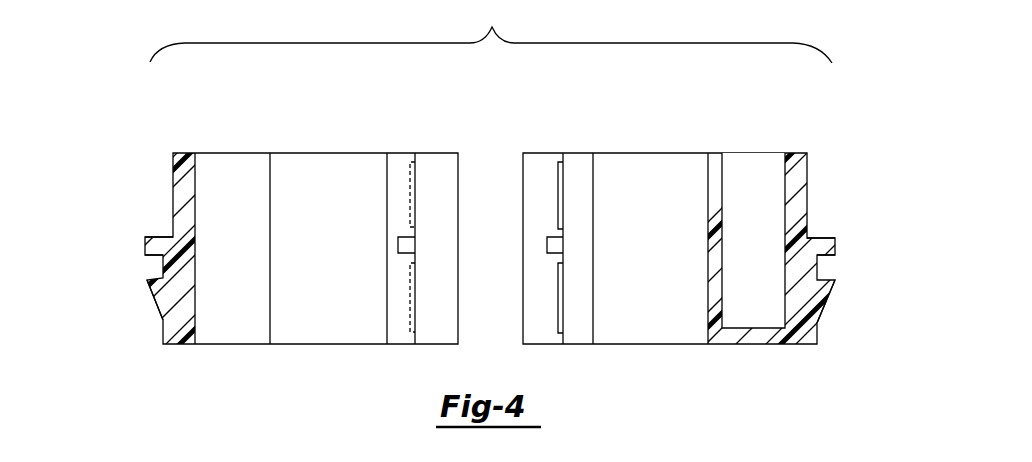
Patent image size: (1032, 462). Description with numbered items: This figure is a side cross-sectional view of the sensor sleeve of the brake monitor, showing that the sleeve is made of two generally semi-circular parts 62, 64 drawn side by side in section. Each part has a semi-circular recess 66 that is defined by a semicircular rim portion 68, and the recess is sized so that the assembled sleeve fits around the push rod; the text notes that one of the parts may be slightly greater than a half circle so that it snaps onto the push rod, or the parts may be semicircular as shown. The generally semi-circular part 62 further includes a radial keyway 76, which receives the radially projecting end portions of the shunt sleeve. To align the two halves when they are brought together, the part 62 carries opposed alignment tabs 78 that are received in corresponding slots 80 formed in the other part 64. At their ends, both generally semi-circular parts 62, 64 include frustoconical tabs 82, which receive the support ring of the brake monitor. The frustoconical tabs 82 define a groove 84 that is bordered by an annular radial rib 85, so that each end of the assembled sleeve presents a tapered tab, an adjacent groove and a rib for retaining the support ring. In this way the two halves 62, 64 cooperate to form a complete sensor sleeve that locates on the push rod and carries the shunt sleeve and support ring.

The generally semi-circular part 62 is at (161, 170).
The generally semi-circular part 64 is at (818, 178).
The semi-circular recess 66 is at (762, 178).
The semicircular rim portion 68 is at (708, 218).
The radial keyway 76 is at (248, 243).
The alignment tabs 78 is at (558, 200).
The slots 80 is at (412, 283).
The frustoconical tabs 82 is at (148, 282).
The groove 84 is at (158, 267).
The annular radial rib 85 is at (825, 237).